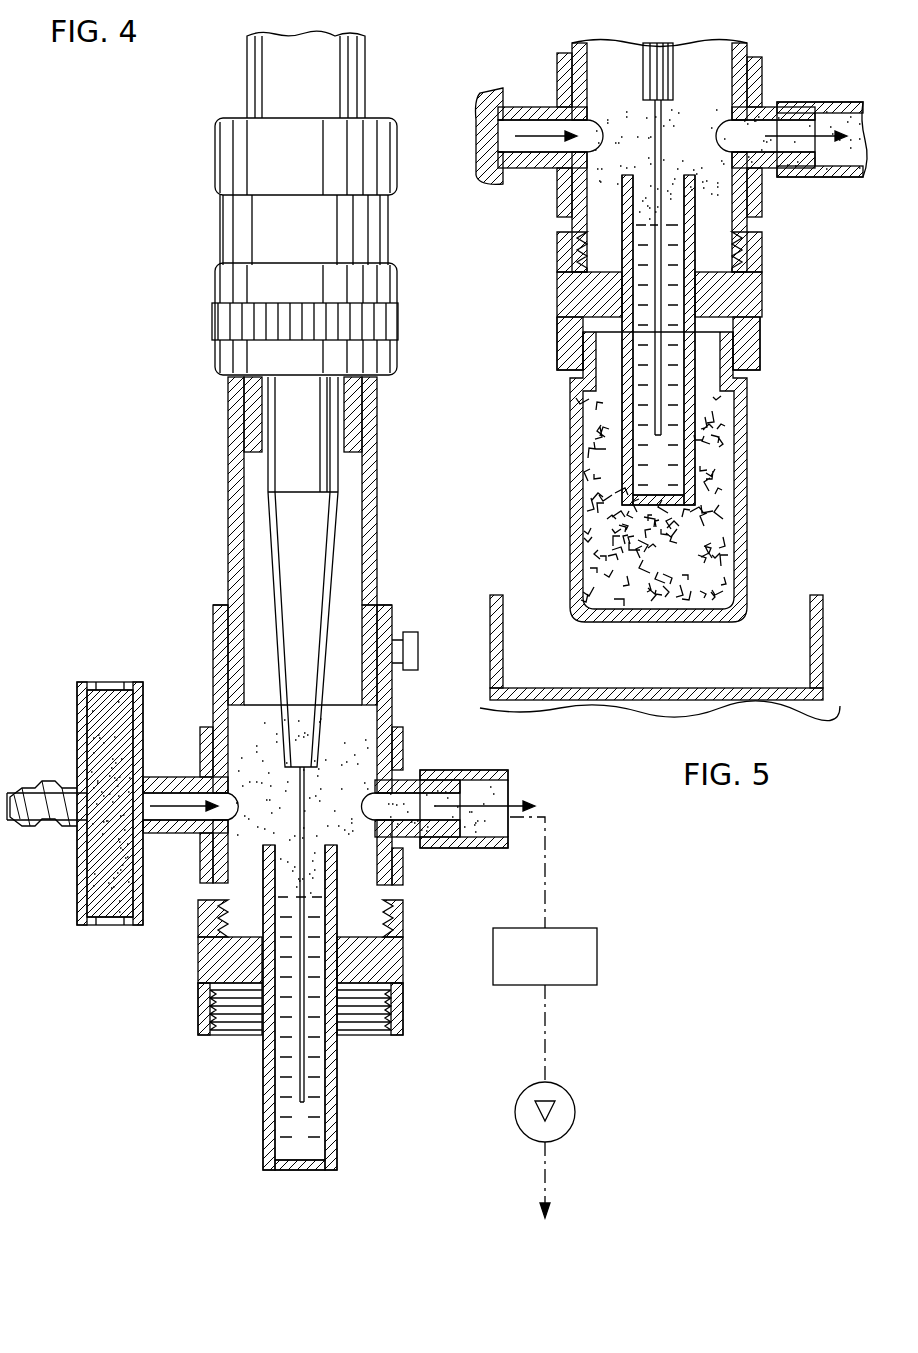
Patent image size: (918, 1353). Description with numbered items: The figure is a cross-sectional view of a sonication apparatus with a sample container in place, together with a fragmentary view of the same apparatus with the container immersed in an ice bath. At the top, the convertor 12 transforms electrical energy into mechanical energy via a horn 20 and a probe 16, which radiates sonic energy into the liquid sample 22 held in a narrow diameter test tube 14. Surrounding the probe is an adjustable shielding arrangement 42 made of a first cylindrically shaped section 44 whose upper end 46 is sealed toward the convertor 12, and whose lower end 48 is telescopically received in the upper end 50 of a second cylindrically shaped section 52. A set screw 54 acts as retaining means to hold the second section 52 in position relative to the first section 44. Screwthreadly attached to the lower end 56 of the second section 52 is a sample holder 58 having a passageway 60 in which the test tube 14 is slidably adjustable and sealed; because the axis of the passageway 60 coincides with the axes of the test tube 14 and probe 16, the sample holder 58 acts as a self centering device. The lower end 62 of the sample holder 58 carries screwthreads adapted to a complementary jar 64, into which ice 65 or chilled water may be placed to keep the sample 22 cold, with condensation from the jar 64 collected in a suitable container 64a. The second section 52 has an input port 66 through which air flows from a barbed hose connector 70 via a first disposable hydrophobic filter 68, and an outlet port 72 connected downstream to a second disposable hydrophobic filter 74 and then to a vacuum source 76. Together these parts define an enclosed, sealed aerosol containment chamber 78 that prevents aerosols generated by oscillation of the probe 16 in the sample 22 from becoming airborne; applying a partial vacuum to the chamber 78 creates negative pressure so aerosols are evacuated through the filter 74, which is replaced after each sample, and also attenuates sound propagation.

In FIG. 4, the convertor 12 is at (383, 290).
In FIG. 4, the test tube 14 is at (330, 1093).
In FIG. 5, the test tube 14 is at (695, 414).
In FIG. 4, the probe 16 is at (303, 795).
In FIG. 5, the probe 16 is at (660, 360).
In FIG. 4, the horn 20 is at (310, 527).
In FIG. 4, the liquid sample 22 is at (285, 1078).
In FIG. 5, the liquid sample 22 is at (665, 452).
In FIG. 4, the shielding arrangement 42 is at (224, 592).
In FIG. 4, the first cylindrically shaped section 44 is at (235, 520).
In FIG. 4, the upper end 46 is at (380, 383).
In FIG. 4, the lower end 48 is at (365, 628).
In FIG. 4, the upper end 50 is at (390, 620).
In FIG. 4, the second cylindrically shaped section 52 is at (213, 690).
In FIG. 5, the second cylindrically shaped section 52 is at (742, 46).
In FIG. 4, the set screw 54 is at (413, 640).
In FIG. 4, the lower end 56 is at (380, 895).
In FIG. 4, the sample holder 58 is at (397, 915).
In FIG. 5, the sample holder 58 is at (760, 282).
In FIG. 4, the passageway 60 is at (277, 946).
In FIG. 4, the lower end 62 is at (222, 1022).
In FIG. 5, the jar 64 is at (745, 476).
In FIG. 5, the container 64a is at (805, 616).
In FIG. 5, the ice 65 is at (718, 523).
In FIG. 4, the input port 66 is at (190, 778).
In FIG. 5, the input port 66 is at (548, 107).
In FIG. 4, the first disposable hydrophobic filter 68 is at (90, 692).
In FIG. 5, the first disposable hydrophobic filter 68 is at (483, 104).
In FIG. 4, the barbed hose connector 70 is at (30, 800).
In FIG. 4, the outlet port 72 is at (412, 780).
In FIG. 5, the outlet port 72 is at (840, 110).
In FIG. 4, the second disposable hydrophobic filter 74 is at (580, 935).
In FIG. 4, the vacuum source 76 is at (565, 1096).
In FIG. 4, the aerosol containment chamber 78 is at (375, 742).
In FIG. 5, the aerosol containment chamber 78 is at (732, 85).